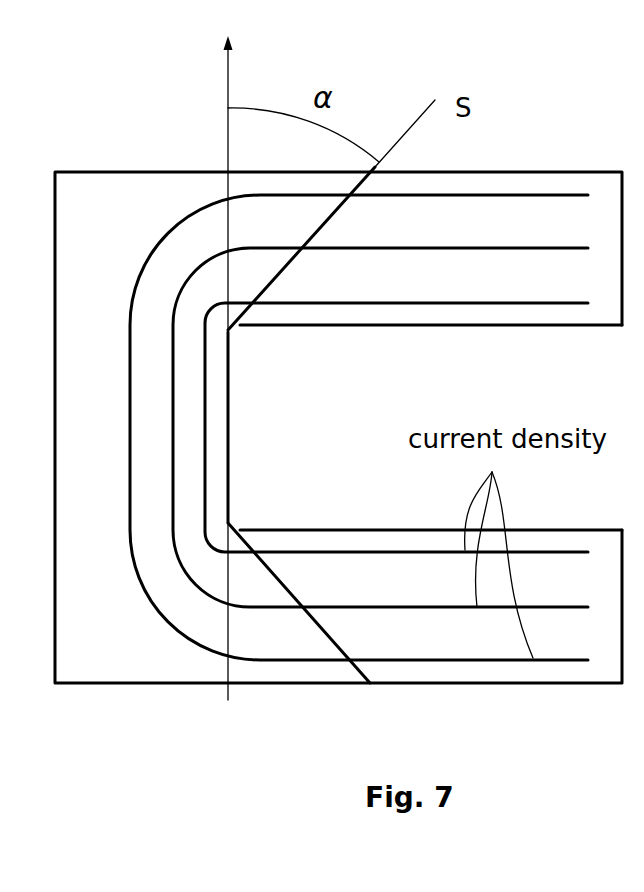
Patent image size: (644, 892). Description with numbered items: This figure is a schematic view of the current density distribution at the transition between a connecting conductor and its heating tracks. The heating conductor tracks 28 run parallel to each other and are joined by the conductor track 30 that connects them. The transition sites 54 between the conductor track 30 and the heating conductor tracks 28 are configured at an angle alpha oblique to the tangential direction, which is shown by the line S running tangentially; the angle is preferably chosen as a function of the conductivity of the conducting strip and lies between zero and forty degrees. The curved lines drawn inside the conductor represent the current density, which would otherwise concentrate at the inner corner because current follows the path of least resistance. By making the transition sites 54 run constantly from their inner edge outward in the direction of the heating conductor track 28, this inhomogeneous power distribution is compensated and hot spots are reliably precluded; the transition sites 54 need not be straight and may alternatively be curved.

The heating conductor track 28 is at (510, 230).
The conductor track 30 is at (90, 188).
The transition site 54 is at (305, 597).